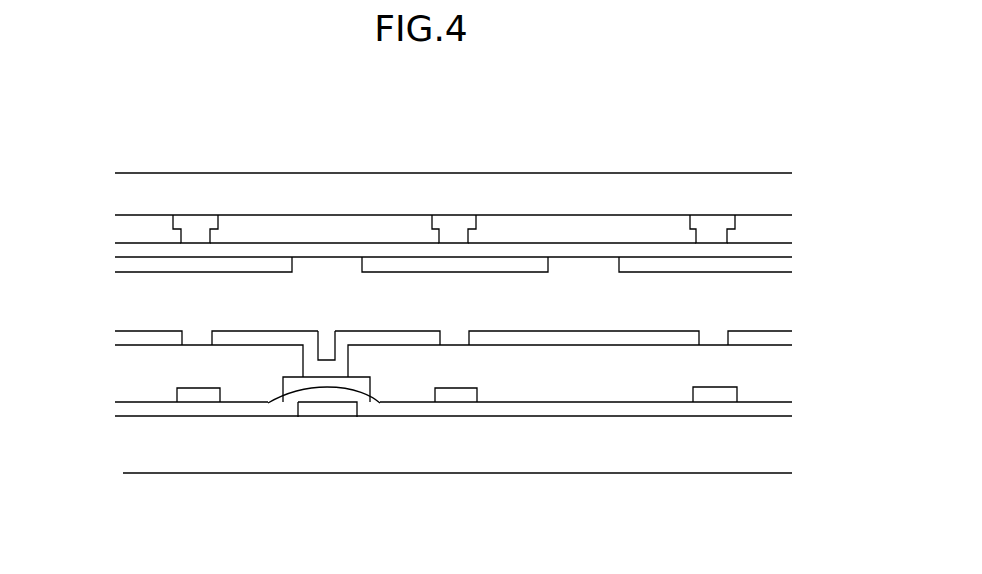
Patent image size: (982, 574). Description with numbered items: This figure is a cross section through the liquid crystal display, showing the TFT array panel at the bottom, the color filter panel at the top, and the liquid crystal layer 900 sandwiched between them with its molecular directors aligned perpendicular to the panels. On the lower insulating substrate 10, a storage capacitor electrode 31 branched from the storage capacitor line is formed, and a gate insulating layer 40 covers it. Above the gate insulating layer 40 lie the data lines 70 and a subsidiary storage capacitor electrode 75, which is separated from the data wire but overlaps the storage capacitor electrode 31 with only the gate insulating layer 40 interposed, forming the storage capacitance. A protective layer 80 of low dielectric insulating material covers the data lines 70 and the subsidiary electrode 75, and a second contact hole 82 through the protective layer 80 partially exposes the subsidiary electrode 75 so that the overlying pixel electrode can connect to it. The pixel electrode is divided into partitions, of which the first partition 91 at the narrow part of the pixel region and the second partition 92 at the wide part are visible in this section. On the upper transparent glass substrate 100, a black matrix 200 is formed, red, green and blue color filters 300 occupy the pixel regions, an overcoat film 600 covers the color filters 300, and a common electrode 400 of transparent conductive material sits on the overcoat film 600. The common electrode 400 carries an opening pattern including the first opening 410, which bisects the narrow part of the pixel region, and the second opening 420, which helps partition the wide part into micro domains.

The liquid crystal layer 900 is at (132, 303).
The transparent glass substrate 100 is at (652, 183).
The black matrix 200 is at (453, 223).
The color filter 300 is at (317, 223).
The overcoat film 600 is at (365, 250).
The common electrode 400 is at (245, 267).
The first opening 410 is at (342, 268).
The second opening 420 is at (585, 266).
The insulating substrate 10 is at (520, 458).
The storage capacitor electrode 31 is at (323, 412).
The gate insulating layer 40 is at (417, 410).
The data line 70 is at (198, 398).
The subsidiary storage capacitor electrode 75 is at (350, 381).
The protective layer 80 is at (572, 388).
The second contact hole 82 is at (325, 331).
The first partition 91 is at (252, 338).
The second partition 92 is at (635, 336).